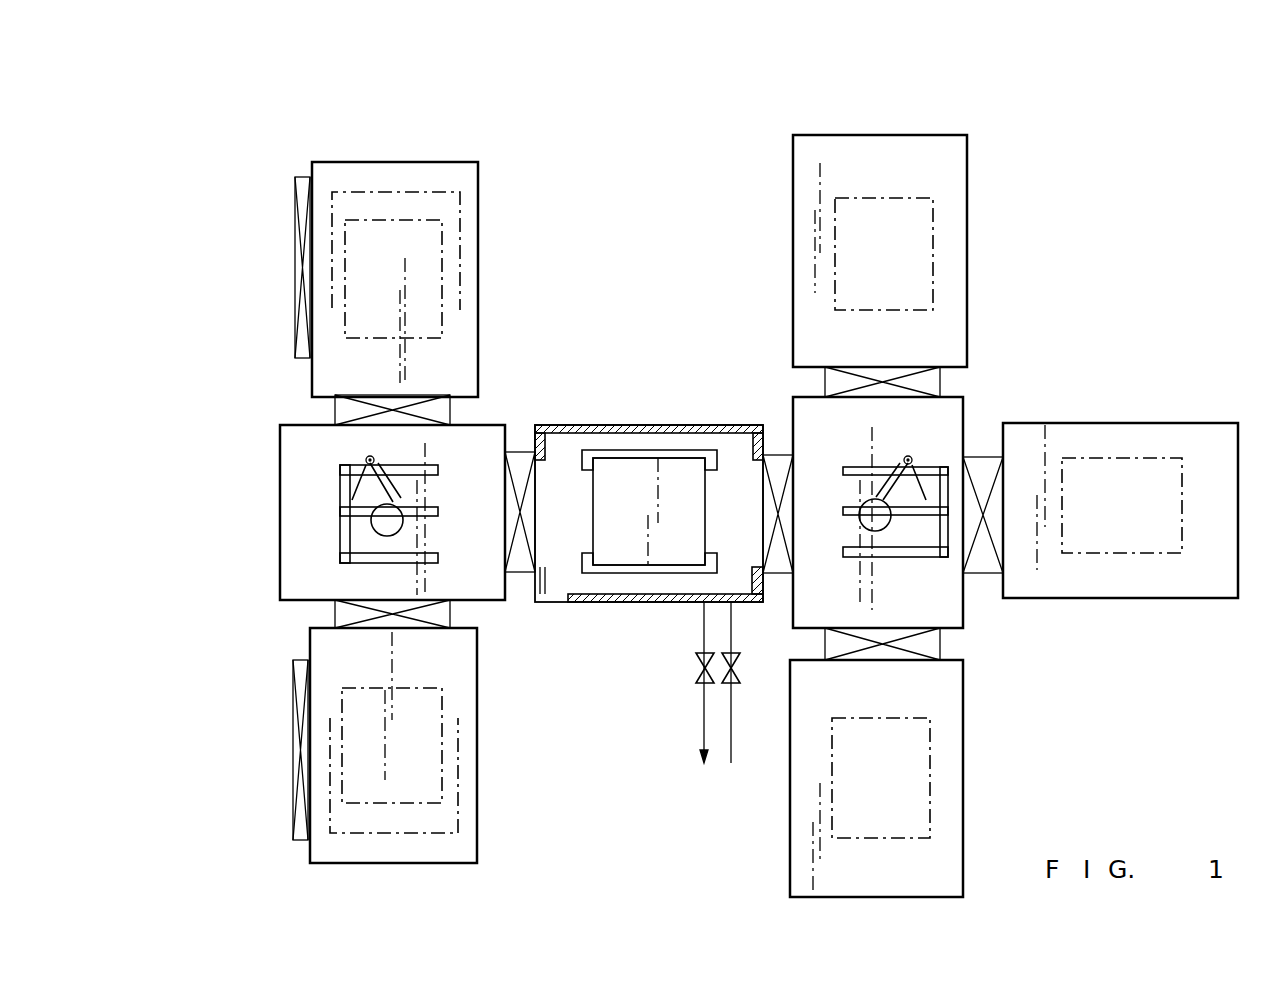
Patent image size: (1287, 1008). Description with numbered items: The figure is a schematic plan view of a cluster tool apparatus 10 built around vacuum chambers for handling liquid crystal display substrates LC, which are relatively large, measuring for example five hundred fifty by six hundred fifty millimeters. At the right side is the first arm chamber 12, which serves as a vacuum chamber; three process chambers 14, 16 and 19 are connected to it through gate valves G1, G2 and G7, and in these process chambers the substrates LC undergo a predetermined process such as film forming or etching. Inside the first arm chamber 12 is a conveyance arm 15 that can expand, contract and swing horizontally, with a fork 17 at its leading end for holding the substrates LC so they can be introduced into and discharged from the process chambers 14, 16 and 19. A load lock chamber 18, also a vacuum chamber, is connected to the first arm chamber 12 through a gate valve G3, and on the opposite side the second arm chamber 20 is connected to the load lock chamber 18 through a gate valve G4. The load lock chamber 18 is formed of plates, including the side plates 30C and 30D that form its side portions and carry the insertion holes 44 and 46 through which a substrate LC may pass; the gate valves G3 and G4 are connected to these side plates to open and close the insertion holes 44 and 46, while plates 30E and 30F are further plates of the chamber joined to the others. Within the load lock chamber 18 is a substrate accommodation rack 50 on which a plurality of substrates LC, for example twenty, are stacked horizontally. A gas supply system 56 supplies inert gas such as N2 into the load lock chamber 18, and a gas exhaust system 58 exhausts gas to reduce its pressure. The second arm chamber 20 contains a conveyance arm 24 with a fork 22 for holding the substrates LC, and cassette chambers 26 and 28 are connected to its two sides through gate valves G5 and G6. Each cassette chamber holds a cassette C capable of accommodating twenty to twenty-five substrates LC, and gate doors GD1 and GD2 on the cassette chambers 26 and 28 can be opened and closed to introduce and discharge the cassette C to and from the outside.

The cluster tool apparatus 10 is at (710, 79).
The first arm chamber 12 is at (965, 412).
The process chamber 14 is at (965, 785).
The conveyance arm 15 is at (912, 458).
The process chamber 16 is at (967, 280).
The fork 17 is at (935, 560).
The load lock chamber 18 is at (581, 405).
The process chamber 19 is at (1153, 423).
The second arm chamber 20 is at (280, 535).
The fork 22 is at (340, 545).
The conveyance arm 24 is at (366, 460).
The cassette chamber 26 is at (478, 815).
The cassette chamber 28 is at (478, 270).
The side plate 30C is at (760, 606).
The side plate 30D is at (527, 597).
The plate 30E is at (628, 418).
The plate 30F is at (627, 608).
The insertion hole 44 is at (755, 506).
The insertion hole 46 is at (543, 490).
The substrate accommodation rack 50 is at (685, 583).
The gas supply system 56 is at (731, 740).
The gas exhaust system 58 is at (704, 722).
The gate valve G1 is at (942, 650).
The gate valve G2 is at (942, 380).
The gate valve G3 is at (778, 455).
The gate valve G4 is at (517, 430).
The gate valve G5 is at (335, 618).
The gate valve G6 is at (335, 415).
The gate valve G7 is at (990, 583).
The gate door GD1 is at (293, 680).
The gate door GD2 is at (300, 177).
The liquid crystal display substrate LC is at (442, 325).
The cassette C is at (470, 205).
The N2 gas N2 is at (736, 781).